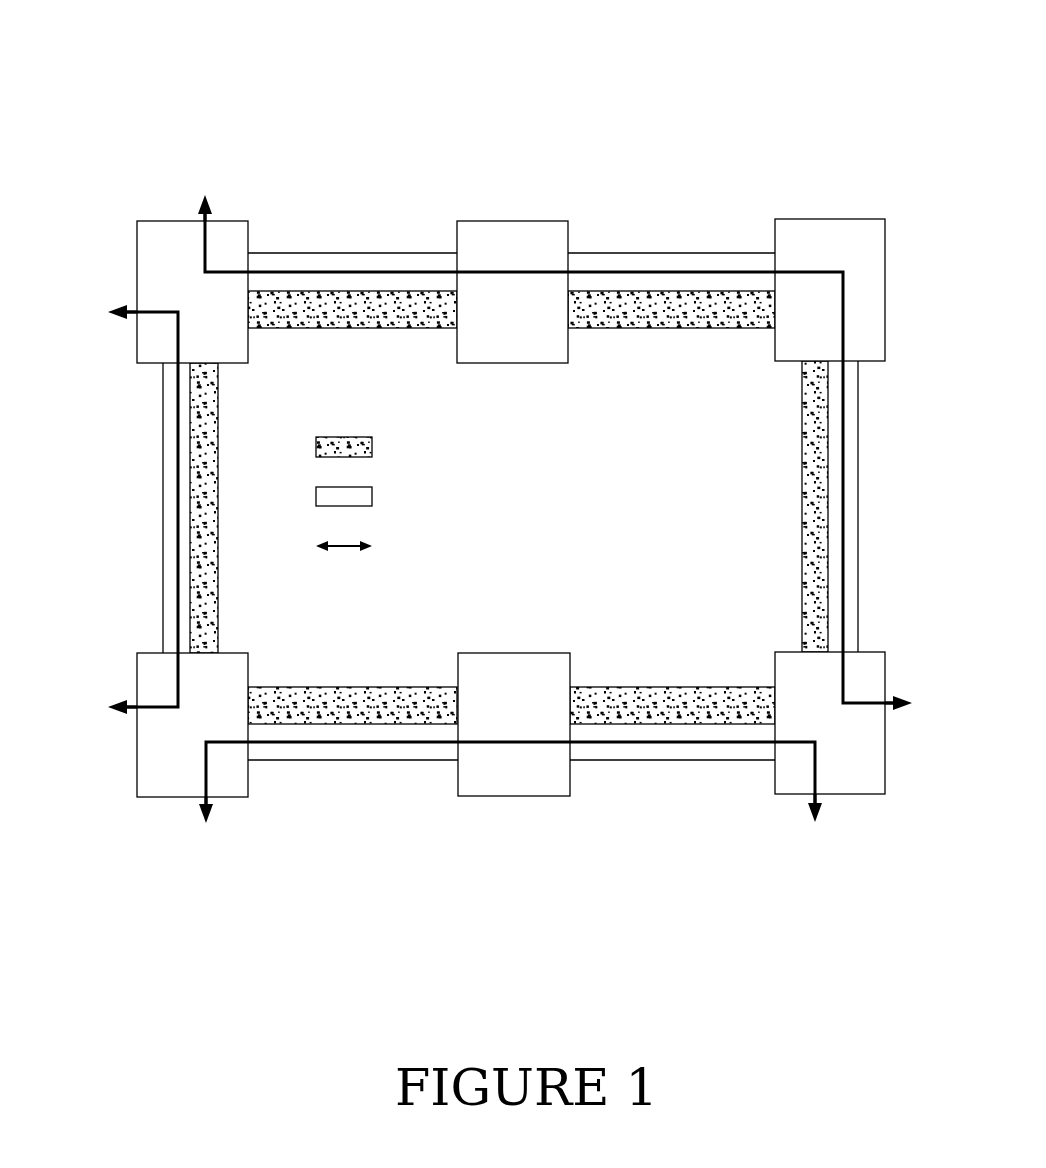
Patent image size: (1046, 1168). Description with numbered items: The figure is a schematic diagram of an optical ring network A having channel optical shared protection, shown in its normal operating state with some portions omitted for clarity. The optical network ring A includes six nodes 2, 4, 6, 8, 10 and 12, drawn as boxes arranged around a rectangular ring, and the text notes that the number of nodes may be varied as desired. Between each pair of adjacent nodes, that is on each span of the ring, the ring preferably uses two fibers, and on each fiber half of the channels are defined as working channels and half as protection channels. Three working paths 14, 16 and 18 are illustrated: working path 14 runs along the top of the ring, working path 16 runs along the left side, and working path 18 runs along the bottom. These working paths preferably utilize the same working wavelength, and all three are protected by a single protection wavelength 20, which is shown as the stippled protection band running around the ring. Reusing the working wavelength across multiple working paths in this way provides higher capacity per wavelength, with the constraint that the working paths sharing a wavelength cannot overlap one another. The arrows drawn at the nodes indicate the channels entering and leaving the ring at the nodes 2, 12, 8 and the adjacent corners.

The optical ring network A is at (464, 124).
The node 2 is at (157, 215).
The node 4 is at (542, 215).
The node 6 is at (870, 212).
The node 8 is at (868, 797).
The node 10 is at (555, 800).
The node 12 is at (143, 803).
The working path 14 is at (375, 272).
The working path 16 is at (165, 430).
The working path 18 is at (343, 762).
The protection wavelength 20 is at (690, 705).